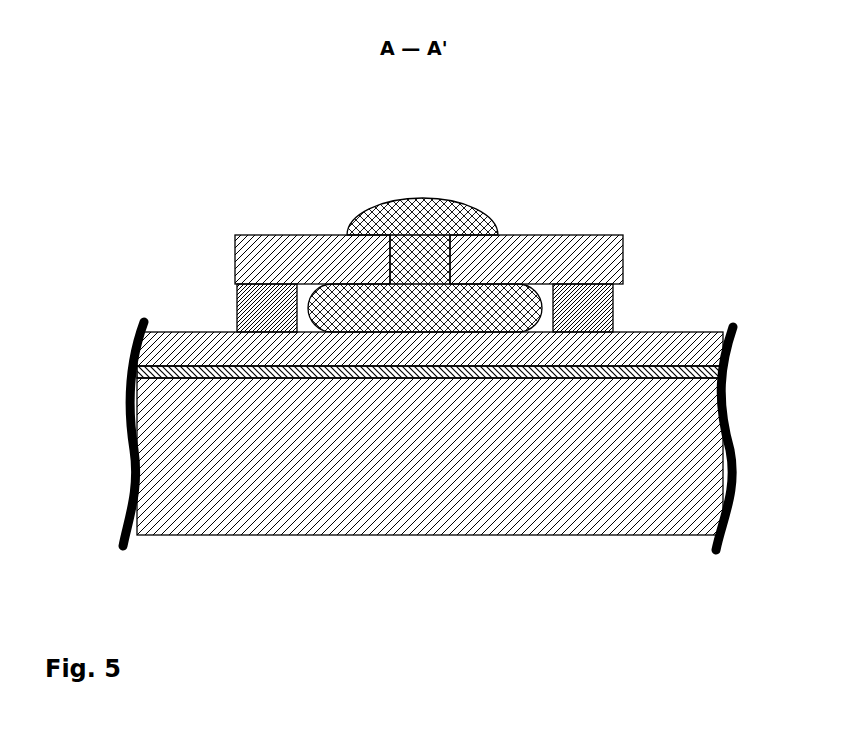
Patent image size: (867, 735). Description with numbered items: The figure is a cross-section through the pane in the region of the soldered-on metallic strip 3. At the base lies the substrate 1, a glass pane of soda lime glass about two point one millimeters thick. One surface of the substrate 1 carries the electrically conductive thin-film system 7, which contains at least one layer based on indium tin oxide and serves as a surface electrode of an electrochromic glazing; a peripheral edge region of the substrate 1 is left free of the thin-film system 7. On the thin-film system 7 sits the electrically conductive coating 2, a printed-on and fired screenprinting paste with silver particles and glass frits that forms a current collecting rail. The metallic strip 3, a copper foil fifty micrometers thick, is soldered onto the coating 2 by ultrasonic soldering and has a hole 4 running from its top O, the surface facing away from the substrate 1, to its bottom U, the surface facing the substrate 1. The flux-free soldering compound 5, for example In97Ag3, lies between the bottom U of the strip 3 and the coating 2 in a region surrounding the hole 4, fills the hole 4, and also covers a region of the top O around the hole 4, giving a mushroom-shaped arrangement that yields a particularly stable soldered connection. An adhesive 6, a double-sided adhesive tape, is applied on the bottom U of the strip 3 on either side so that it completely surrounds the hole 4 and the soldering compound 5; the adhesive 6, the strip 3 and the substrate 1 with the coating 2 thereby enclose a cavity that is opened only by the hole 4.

The substrate 1 is at (322, 523).
The electrically conductive coating 2 is at (700, 350).
The thin-film system 7 is at (662, 367).
The metallic strip 3 is at (593, 257).
The hole 4 is at (426, 250).
The soldering compound 5 is at (477, 210).
The adhesive 6 is at (237, 308).
The bottom U is at (237, 236).
The top O is at (287, 236).